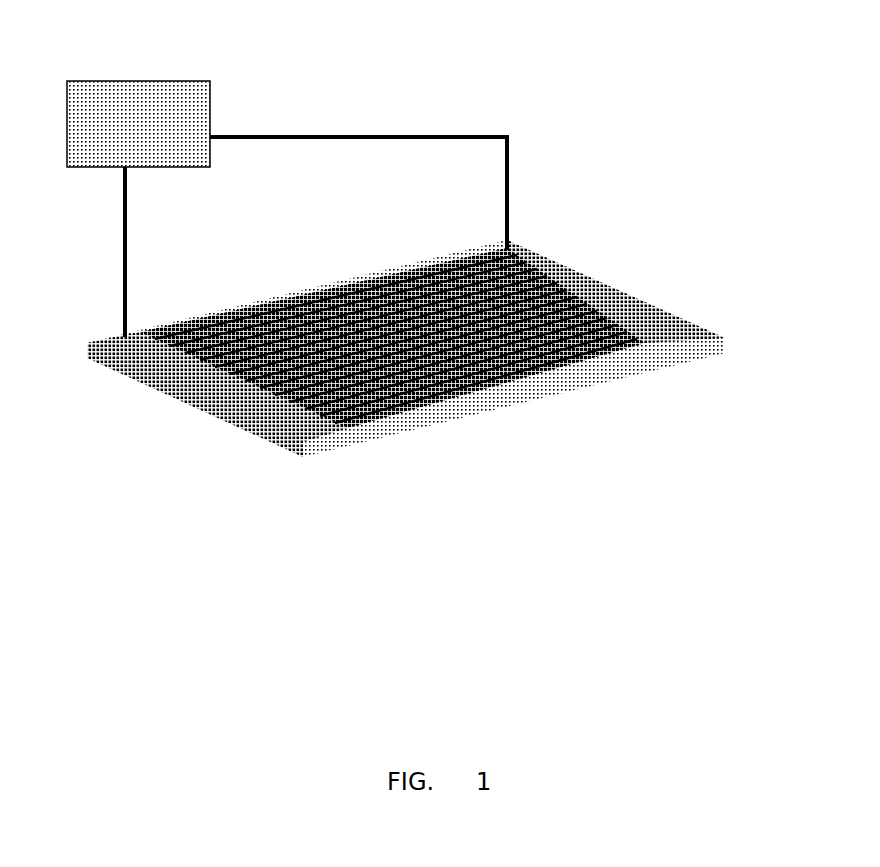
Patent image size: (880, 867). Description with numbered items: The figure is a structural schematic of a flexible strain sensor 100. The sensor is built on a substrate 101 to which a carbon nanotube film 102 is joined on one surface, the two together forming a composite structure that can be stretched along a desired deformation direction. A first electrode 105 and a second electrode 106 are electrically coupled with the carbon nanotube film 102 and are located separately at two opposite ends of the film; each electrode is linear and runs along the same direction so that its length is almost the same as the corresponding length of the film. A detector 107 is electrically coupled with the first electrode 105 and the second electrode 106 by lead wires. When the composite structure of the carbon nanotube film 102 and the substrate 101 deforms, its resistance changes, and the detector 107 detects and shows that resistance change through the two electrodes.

The flexible strain sensor 100 is at (394, 78).
The substrate 101 is at (647, 370).
The carbon nanotube film 102 is at (350, 276).
The first electrode 105 is at (158, 388).
The second electrode 106 is at (633, 292).
The detector 107 is at (287, 209).